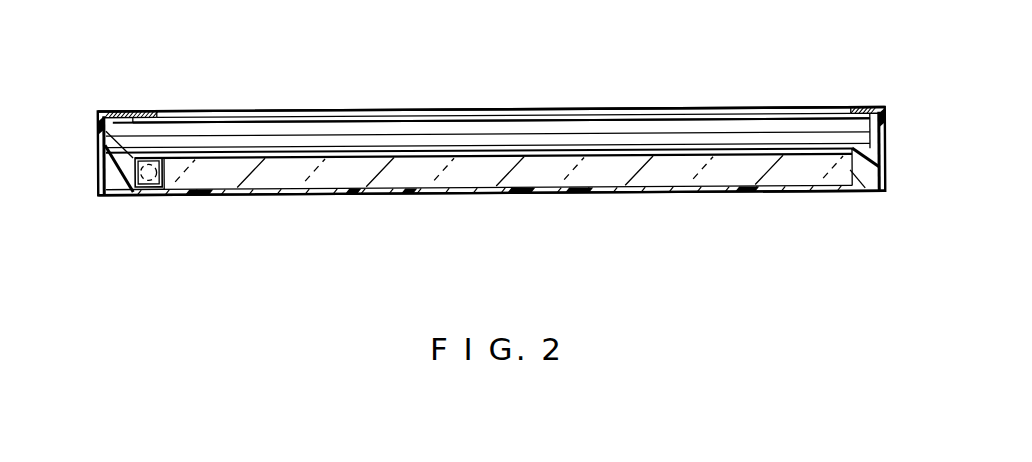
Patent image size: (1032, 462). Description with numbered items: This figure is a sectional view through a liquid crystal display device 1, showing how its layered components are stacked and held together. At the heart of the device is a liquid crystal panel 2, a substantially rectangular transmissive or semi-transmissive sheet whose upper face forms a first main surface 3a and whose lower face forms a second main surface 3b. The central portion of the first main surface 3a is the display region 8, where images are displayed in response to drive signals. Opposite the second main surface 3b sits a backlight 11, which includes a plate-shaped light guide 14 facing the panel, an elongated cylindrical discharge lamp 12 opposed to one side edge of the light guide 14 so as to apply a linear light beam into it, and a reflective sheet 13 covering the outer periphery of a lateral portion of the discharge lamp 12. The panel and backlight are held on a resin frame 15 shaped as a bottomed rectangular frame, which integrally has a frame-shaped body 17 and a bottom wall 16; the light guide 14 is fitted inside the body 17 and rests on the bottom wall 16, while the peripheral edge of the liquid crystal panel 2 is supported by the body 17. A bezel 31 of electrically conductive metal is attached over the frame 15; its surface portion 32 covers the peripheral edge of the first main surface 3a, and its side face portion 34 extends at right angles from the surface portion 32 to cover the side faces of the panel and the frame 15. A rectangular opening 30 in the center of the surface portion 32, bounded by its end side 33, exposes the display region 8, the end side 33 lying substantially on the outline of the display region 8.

The liquid crystal display device 1 is at (476, 106).
The liquid crystal panel 2 is at (705, 108).
The first main surface 3a is at (385, 120).
The second main surface 3b is at (390, 152).
The display region 8 is at (279, 108).
The backlight 11 is at (195, 194).
The discharge lamp 12 is at (149, 186).
The reflective sheet 13 is at (127, 194).
The light guide 14 is at (272, 178).
The frame 15 is at (620, 194).
The bottom wall 16 is at (706, 194).
The body 17 is at (110, 194).
The opening 30 is at (213, 110).
The bezel 31 is at (886, 108).
The surface portion 32 is at (118, 106).
The end side 33 is at (166, 109).
The side face portion 34 is at (98, 136).